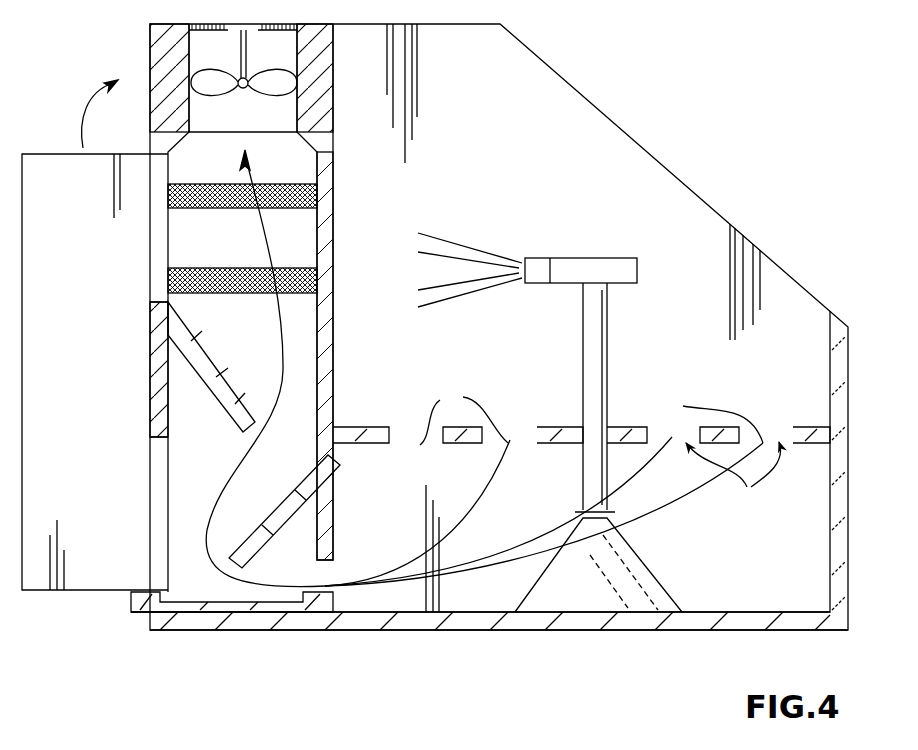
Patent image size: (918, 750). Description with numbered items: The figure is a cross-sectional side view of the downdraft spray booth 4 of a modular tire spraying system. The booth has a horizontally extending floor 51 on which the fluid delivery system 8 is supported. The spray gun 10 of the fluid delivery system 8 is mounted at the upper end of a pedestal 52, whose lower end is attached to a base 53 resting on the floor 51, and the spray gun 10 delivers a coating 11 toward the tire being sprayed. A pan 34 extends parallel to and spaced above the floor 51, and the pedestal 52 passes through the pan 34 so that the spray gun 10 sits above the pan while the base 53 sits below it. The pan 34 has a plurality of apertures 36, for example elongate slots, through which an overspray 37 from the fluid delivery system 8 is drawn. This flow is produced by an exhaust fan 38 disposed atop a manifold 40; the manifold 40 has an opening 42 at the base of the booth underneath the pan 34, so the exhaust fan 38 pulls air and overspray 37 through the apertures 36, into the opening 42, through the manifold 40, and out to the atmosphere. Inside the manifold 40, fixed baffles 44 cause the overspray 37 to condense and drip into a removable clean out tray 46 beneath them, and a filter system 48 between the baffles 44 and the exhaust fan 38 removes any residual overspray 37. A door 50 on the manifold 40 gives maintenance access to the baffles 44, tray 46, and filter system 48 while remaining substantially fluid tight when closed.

The downdraft spray booth 4 is at (663, 106).
The fluid delivery system 8 is at (676, 215).
The spray gun 10 is at (580, 258).
The coating 11 is at (468, 248).
The pan 34 is at (467, 443).
The apertures 36 is at (733, 477).
The overspray 37 is at (591, 412).
The exhaust fan 38 is at (282, 50).
The manifold 40 is at (334, 355).
The opening 42 is at (347, 598).
The fixed baffles 44 is at (255, 520).
The removable clean out tray 46 is at (238, 606).
The filter system 48 is at (240, 222).
The door 50 is at (106, 389).
The floor 51 is at (583, 625).
The pedestal 52 is at (598, 350).
The base 53 is at (645, 580).